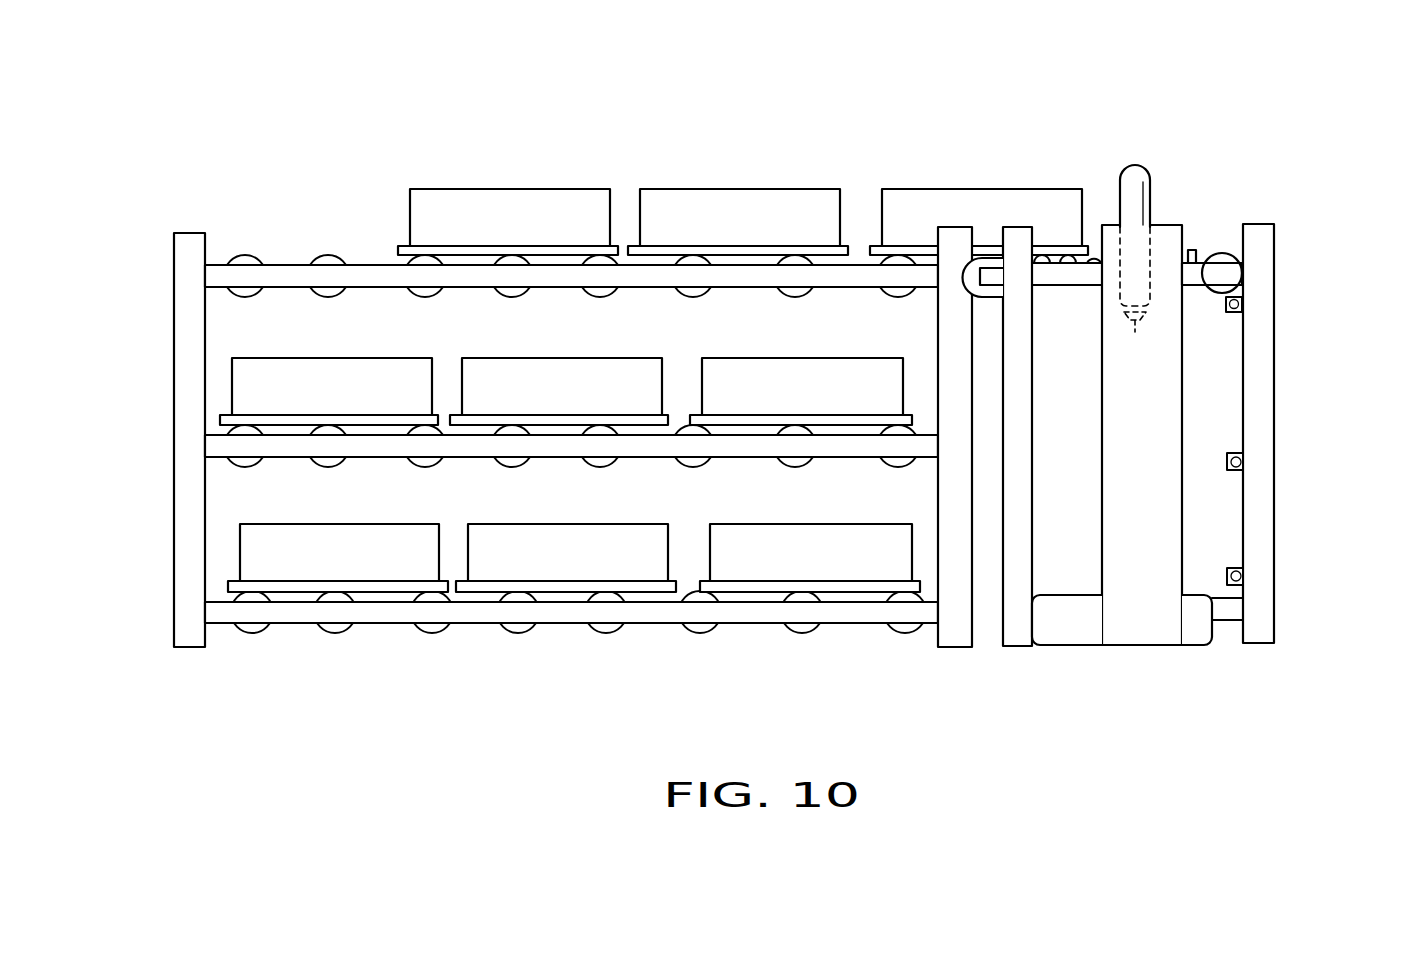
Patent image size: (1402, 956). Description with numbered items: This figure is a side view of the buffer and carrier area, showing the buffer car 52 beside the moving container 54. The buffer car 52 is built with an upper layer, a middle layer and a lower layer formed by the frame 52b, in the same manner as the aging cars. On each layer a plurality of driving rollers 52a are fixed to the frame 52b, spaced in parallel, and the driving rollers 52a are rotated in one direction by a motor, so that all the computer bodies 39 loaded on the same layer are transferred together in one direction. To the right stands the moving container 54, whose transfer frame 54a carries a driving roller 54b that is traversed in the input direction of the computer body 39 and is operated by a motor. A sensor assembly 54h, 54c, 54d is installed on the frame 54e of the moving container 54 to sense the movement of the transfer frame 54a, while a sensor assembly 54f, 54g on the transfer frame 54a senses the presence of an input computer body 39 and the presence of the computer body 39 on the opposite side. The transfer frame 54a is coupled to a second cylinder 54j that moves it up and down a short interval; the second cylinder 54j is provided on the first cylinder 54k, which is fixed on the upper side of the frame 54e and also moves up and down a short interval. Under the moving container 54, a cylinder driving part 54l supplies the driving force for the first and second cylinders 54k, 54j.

The buffer car 52 is at (205, 197).
The driving roller 52a is at (328, 262).
The frame 52b is at (225, 272).
The computer body 39 is at (697, 205).
The moving container 54 is at (1280, 170).
The transfer frame 54a is at (1235, 278).
The driving roller 54b is at (1218, 250).
The sensor assembly 54c is at (1245, 462).
The sensor assembly 54d is at (1245, 576).
The frame 54e is at (1280, 235).
The sensor assembly 54f is at (1052, 272).
The sensor assembly 54g is at (1198, 287).
The sensor assembly 54h is at (1243, 303).
The second cylinder 54j is at (1137, 165).
The first cylinder 54k is at (1195, 622).
The cylinder driving part 54l is at (1070, 620).